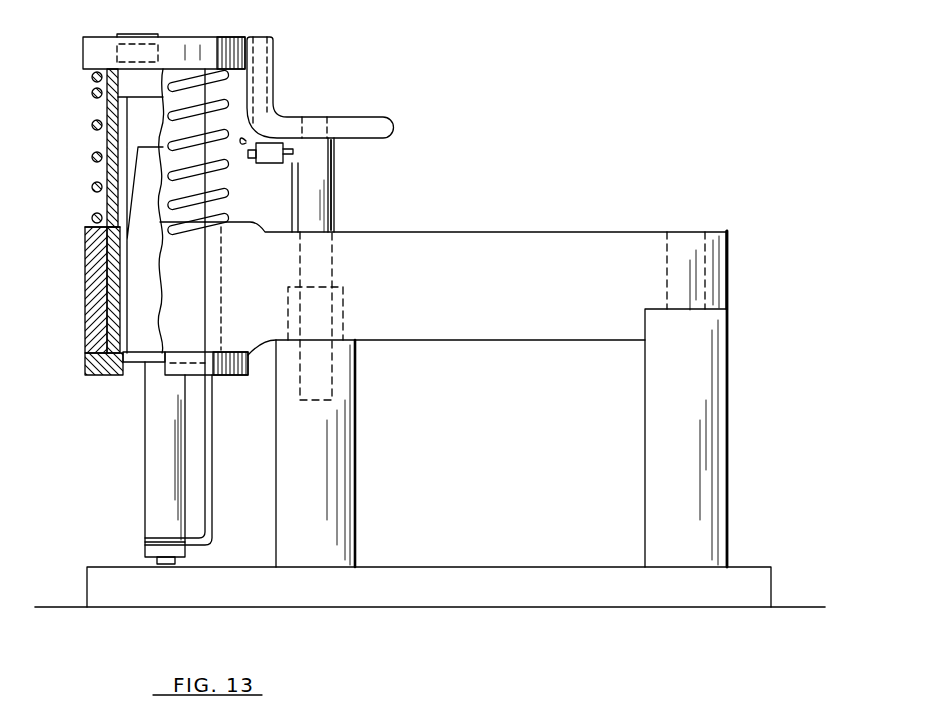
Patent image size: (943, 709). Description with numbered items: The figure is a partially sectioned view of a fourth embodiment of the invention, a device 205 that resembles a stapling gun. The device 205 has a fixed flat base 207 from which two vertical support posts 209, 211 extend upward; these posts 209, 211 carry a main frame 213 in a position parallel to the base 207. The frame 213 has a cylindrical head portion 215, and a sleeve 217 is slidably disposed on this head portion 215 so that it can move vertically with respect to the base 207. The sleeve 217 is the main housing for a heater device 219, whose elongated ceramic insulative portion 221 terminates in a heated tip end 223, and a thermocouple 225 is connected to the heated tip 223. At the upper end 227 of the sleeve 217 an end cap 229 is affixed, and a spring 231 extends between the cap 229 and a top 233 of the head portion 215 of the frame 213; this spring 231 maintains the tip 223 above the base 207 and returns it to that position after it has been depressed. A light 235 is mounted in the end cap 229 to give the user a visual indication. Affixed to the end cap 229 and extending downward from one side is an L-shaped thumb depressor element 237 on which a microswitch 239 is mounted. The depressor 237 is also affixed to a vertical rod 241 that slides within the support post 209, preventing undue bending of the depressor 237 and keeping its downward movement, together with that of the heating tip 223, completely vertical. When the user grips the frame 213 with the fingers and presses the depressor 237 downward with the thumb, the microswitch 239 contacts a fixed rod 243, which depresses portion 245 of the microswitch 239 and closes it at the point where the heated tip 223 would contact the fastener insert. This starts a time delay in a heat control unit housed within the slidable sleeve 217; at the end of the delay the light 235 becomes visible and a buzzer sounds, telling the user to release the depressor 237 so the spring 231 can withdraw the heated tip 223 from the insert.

The device 205 is at (618, 197).
The fixed flat base 207 is at (748, 578).
The vertical support post 209 is at (335, 480).
The vertical support post 211 is at (705, 468).
The main frame 213 is at (445, 238).
The cylindrical head portion 215 is at (90, 310).
The sleeve 217 is at (107, 143).
The heater device 219 is at (155, 204).
The elongated ceramic insulative portion 221 is at (153, 462).
The heated tip end 223 is at (150, 552).
The thermocouple 225 is at (212, 527).
The upper end of the sleeve 227 is at (90, 75).
The end cap 229 is at (92, 50).
The spring 231 is at (215, 78).
The top of the head portion 233 is at (92, 228).
The light 235 is at (147, 35).
The L-shaped thumb depressor element 237 is at (283, 115).
The microswitch 239 is at (268, 165).
The vertical rod 241 is at (318, 215).
The fixed rod 243 is at (297, 177).
The portion of the microswitch 245 is at (289, 145).